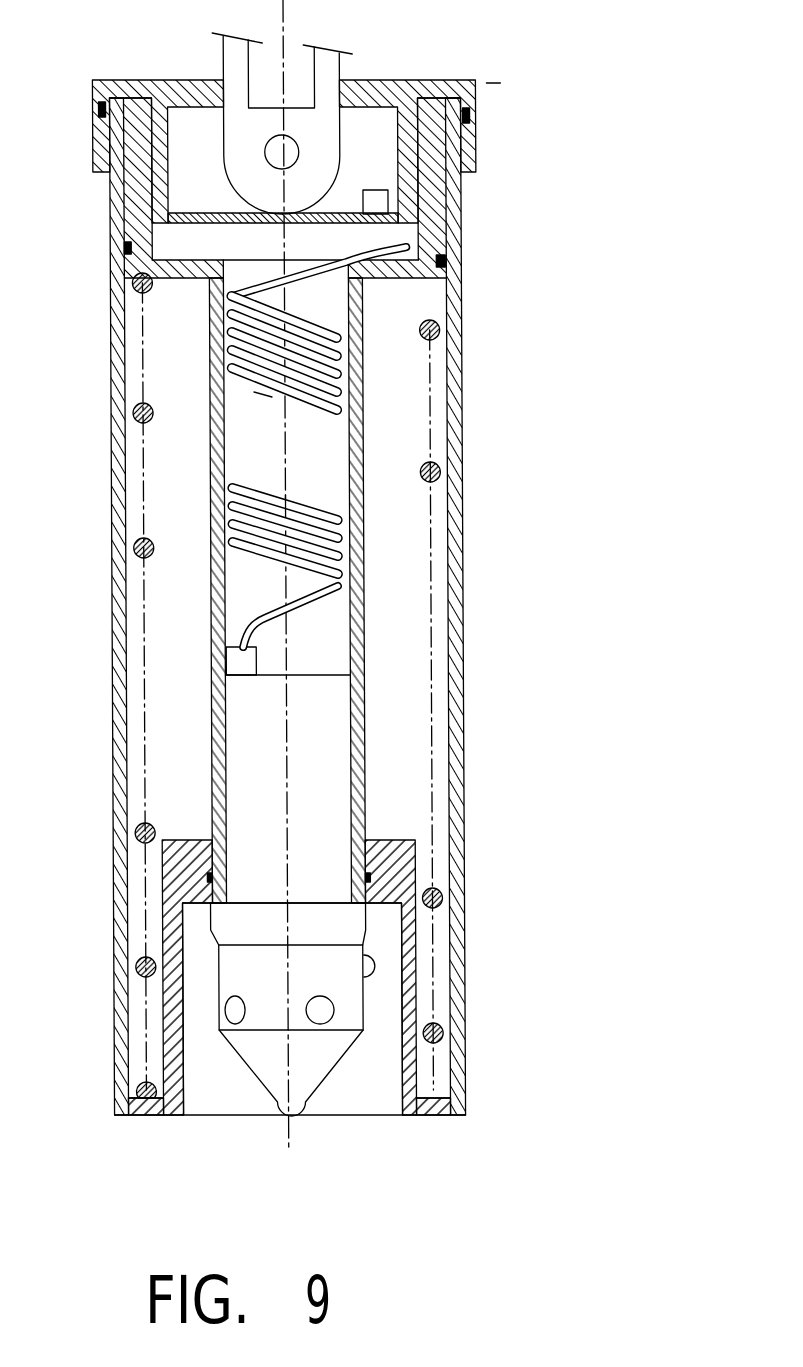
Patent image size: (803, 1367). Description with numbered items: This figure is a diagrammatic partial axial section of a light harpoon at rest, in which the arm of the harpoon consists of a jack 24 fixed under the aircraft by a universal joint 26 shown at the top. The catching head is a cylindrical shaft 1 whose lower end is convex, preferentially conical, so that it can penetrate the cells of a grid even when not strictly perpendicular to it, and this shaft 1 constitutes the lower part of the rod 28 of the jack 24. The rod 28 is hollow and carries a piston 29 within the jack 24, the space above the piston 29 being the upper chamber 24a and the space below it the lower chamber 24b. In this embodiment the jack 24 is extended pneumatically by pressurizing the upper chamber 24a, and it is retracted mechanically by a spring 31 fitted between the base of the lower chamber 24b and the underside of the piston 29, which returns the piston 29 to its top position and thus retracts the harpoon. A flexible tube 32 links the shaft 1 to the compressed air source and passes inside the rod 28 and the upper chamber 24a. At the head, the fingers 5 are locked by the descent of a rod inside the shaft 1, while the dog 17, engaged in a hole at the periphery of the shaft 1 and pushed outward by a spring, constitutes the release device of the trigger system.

The cylindrical shaft 1 is at (267, 1075).
The fingers 5 is at (322, 1017).
The dog 17 is at (373, 968).
The jack 24 is at (462, 688).
The upper chamber 24a is at (426, 286).
The lower chamber 24b is at (156, 720).
The universal joint 26 is at (240, 137).
The rod 28 is at (206, 572).
The piston 29 is at (176, 277).
The spring 31 is at (135, 406).
The flexible tube 32 is at (251, 393).